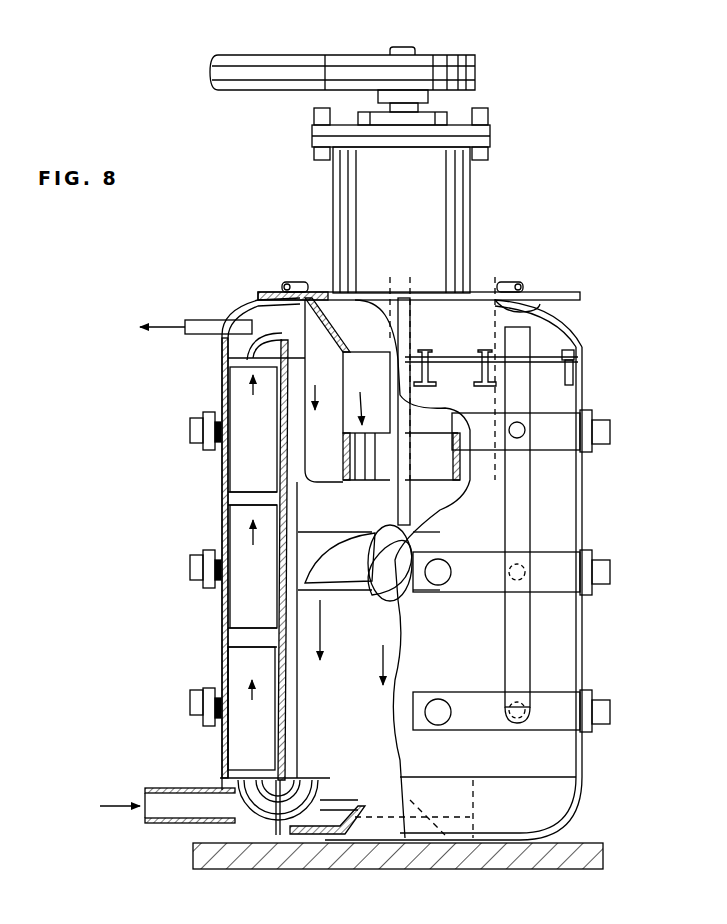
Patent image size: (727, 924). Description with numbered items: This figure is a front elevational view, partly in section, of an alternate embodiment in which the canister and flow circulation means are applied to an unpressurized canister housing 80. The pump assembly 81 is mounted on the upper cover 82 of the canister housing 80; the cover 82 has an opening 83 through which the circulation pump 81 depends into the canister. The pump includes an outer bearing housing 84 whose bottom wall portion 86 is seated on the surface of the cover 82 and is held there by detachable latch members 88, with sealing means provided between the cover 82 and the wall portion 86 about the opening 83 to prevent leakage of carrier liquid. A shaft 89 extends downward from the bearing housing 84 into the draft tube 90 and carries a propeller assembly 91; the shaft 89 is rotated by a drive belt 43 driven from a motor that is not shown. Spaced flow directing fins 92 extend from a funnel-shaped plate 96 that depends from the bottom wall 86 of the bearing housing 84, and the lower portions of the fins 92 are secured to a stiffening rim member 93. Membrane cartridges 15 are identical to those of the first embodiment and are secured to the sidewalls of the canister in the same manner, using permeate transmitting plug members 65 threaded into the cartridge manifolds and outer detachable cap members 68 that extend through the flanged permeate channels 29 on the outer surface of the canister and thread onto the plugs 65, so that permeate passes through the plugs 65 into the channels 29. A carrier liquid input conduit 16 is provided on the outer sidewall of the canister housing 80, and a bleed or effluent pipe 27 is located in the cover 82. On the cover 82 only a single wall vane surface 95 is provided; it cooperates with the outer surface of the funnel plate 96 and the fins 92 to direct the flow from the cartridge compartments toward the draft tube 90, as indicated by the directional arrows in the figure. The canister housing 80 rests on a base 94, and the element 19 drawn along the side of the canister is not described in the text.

The drive belt 43 is at (295, 60).
The outer bearing housing 84 is at (457, 212).
The opening 83 is at (262, 303).
The detachable latch members 88 is at (296, 282).
The bottom wall portion 86 is at (528, 306).
The upper cover 82 is at (568, 324).
The unpressurized canister housing 80 is at (590, 398).
The bleed or effluent pipe 27 is at (198, 328).
The carrier liquid input conduit 16 is at (155, 788).
The base 94 is at (256, 838).
The wall vane surface 95 is at (283, 352).
The membrane cartridges 15 is at (243, 468).
The outer detachable cap member 68 is at (190, 430).
The flanged permeate channel 29 is at (215, 450).
The permeate transmitting plug members 65 is at (218, 440).
The flow directing fins 92 is at (336, 444).
The funnel-shaped plate 96 is at (350, 343).
The stiffening rim member 93 is at (345, 482).
The shaft 89 is at (410, 500).
The tie bar 19 is at (520, 532).
The propeller assembly 91 is at (358, 570).
The pump assembly 81 is at (382, 612).
The draft tube 90 is at (395, 632).